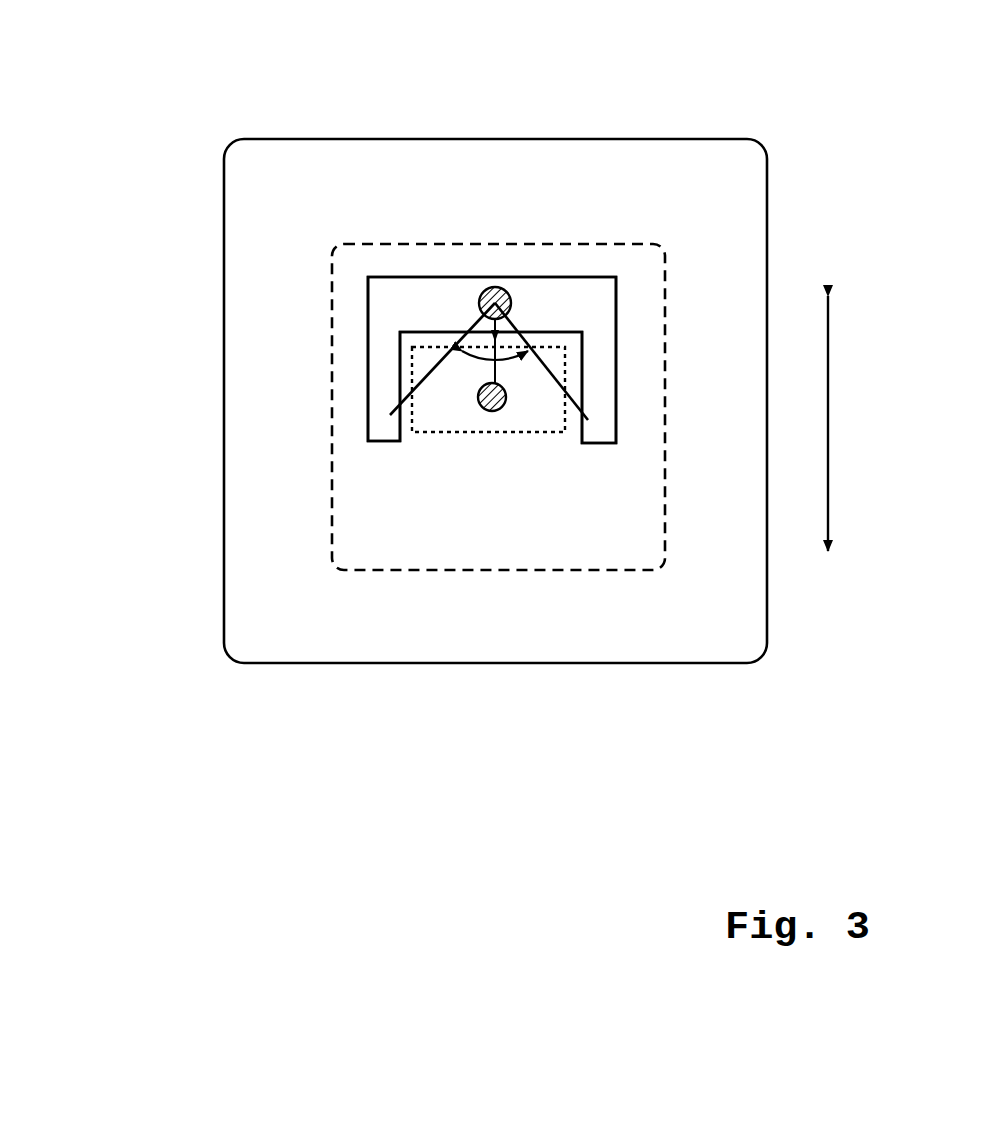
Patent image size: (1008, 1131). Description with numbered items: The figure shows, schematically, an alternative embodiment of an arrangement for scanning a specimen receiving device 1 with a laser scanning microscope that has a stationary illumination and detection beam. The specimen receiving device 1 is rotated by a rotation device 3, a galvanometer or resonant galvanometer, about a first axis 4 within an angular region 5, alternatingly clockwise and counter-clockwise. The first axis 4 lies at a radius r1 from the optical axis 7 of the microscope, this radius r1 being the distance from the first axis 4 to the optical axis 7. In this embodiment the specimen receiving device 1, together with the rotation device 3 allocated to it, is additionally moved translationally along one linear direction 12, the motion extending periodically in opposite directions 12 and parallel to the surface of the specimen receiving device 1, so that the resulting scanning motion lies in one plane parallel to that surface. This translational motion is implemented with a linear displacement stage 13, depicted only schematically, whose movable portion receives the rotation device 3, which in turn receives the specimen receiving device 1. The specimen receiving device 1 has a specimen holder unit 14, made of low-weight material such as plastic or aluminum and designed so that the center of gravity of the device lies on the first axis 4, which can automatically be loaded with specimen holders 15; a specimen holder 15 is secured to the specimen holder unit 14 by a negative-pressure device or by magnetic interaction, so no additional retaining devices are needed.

The specimen receiving device 1 is at (636, 300).
The rotation device 3 is at (609, 550).
The first axis 4 is at (488, 292).
The angular region 5 is at (465, 370).
The optical axis 7 is at (482, 408).
The direction 12 is at (828, 419).
The linear displacement stage 13 is at (347, 637).
The specimen holder unit 14 is at (567, 297).
The specimen holder 15 is at (515, 430).
The radius of first axis r1 is at (490, 335).